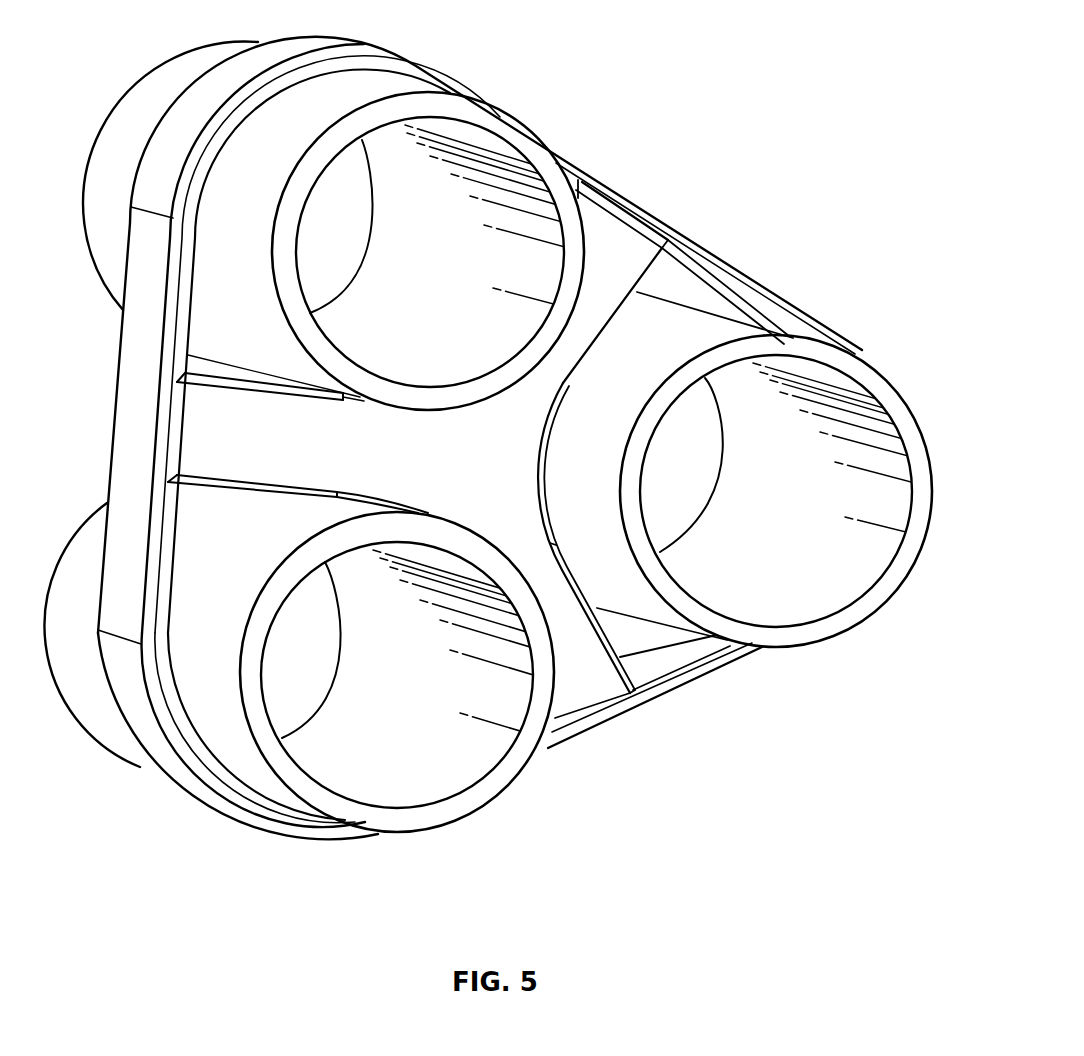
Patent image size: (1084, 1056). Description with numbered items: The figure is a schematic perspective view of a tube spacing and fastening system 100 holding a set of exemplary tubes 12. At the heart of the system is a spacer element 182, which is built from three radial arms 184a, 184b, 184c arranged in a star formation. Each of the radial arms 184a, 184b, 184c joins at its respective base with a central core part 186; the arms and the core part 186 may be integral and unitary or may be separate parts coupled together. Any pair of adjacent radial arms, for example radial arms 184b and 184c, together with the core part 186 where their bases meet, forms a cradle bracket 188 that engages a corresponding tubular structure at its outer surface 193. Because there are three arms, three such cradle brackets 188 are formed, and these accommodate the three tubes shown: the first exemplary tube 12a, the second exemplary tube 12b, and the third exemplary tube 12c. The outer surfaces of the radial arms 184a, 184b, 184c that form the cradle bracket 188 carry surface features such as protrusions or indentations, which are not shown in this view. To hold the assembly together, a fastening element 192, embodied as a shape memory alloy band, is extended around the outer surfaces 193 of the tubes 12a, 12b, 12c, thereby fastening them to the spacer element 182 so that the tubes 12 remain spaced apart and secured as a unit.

The tube spacing and fastening system 100 is at (553, 464).
The tubes 12 is at (842, 475).
The first exemplary tube 12a is at (423, 838).
The second exemplary tube 12b is at (132, 70).
The third exemplary tube 12c is at (842, 475).
The spacer element 182 is at (480, 427).
The radial arm 184a is at (199, 422).
The radial arm 184b is at (623, 240).
The radial arm 184c is at (596, 689).
The core part 186 is at (490, 472).
The cradle bracket 188 is at (533, 508).
The fastening element 192 is at (347, 43).
The outer surface 193 is at (858, 350).